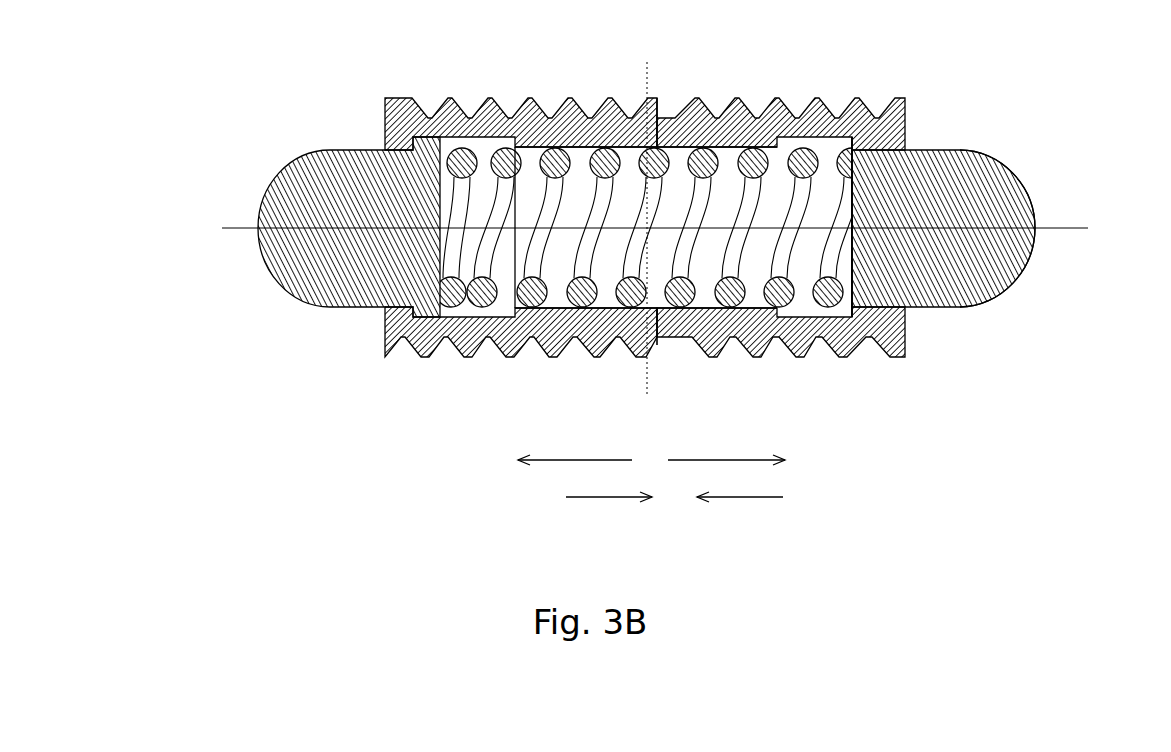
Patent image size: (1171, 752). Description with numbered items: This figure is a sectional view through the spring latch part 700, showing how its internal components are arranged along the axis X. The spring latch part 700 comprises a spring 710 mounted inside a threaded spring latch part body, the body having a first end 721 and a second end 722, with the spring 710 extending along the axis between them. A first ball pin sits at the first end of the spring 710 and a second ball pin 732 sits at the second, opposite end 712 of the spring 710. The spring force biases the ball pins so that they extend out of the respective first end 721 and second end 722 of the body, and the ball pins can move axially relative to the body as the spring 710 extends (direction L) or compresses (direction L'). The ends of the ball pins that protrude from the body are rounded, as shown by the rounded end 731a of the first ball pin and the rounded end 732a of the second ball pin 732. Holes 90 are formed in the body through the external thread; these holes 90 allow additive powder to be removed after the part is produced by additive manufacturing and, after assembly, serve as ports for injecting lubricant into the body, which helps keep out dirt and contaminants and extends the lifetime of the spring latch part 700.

The spring latch part 700 is at (283, 155).
The first end 721 is at (403, 110).
The second end 722 is at (900, 104).
The rounded end of first ball pin 731a is at (276, 290).
The second ball pin 732 is at (977, 152).
The rounded end of second ball pin 732a is at (1033, 207).
The spring 710 is at (537, 289).
The second end of the spring 712 is at (833, 293).
The holes 90 is at (657, 103).